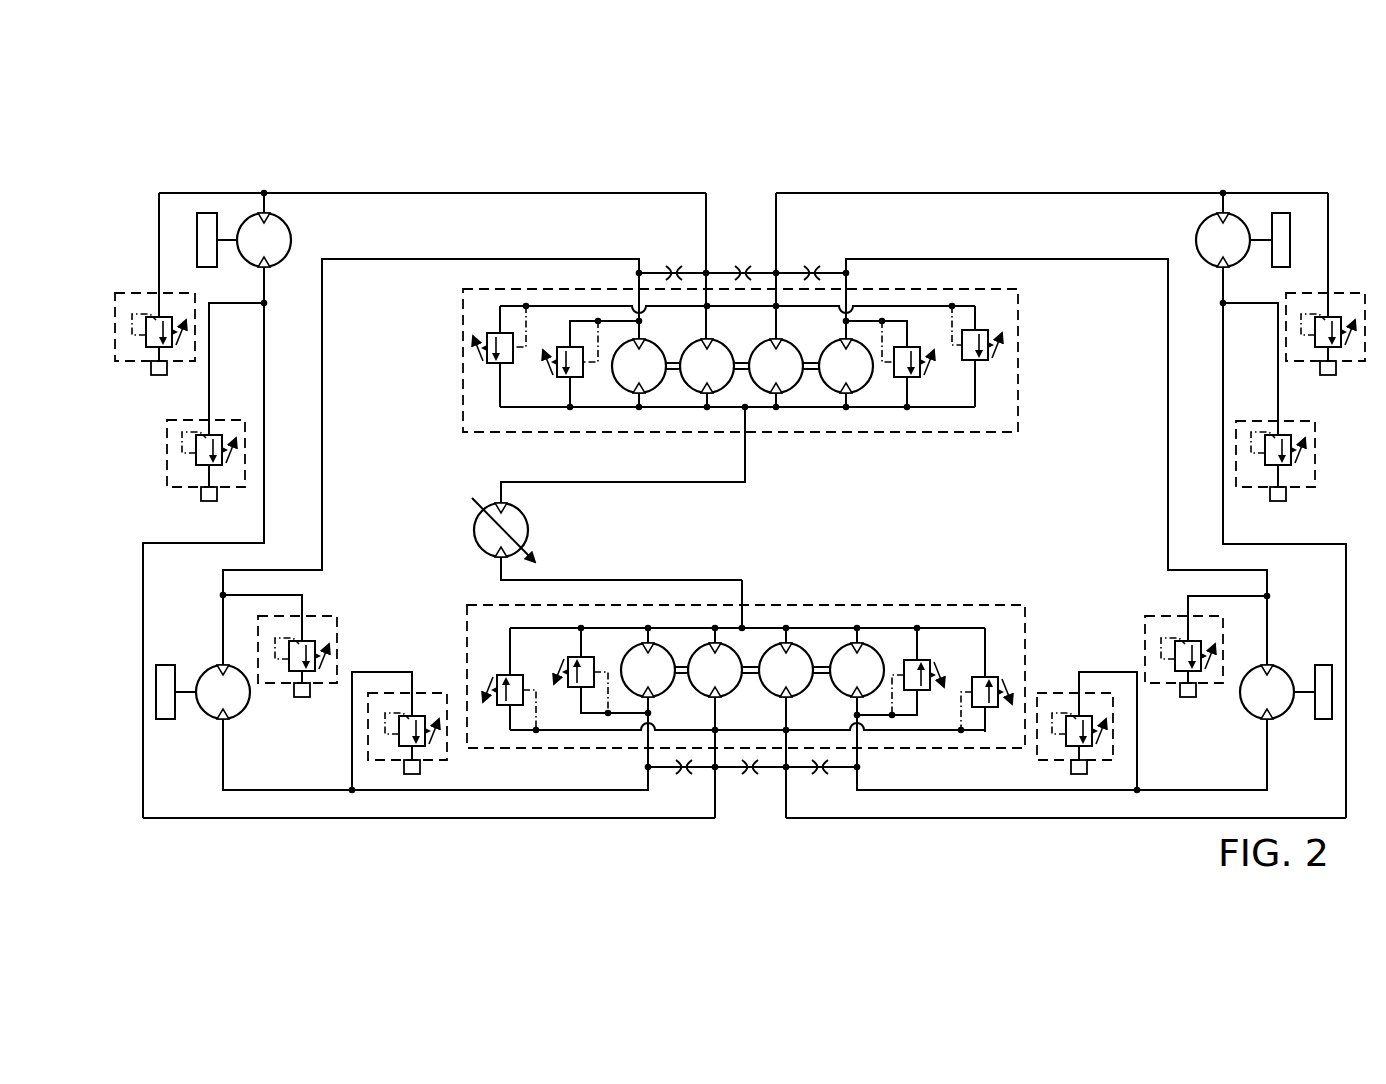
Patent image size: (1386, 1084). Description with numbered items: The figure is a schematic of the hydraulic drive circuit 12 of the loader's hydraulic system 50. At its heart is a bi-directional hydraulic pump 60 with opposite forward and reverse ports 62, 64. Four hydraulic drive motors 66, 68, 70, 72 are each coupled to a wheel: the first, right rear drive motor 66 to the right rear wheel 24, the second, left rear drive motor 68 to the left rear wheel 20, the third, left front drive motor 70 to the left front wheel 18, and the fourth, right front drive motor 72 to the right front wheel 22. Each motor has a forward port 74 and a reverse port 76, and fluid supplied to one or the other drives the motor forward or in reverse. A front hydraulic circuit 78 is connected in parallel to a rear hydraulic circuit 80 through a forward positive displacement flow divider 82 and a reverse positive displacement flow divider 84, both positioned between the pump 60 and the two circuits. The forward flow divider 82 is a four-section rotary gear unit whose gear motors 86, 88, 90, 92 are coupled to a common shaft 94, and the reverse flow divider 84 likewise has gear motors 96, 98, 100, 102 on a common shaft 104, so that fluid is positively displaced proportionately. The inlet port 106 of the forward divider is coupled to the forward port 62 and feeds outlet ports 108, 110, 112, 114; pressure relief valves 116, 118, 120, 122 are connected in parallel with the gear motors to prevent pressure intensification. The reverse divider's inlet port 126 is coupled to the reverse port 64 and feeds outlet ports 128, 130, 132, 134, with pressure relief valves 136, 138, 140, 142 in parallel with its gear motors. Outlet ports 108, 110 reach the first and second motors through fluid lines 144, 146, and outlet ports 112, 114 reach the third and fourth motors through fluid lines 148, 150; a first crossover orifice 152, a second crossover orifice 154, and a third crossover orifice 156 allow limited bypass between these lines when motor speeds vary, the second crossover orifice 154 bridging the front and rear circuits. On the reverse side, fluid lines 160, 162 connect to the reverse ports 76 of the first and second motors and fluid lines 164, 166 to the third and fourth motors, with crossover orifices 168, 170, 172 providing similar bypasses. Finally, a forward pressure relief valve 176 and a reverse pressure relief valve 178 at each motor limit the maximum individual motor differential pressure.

The hydraulic drive circuit 12 is at (1297, 182).
The left front wheel 18 is at (1272, 260).
The left rear wheel 20 is at (220, 258).
The right front wheel 22 is at (1322, 665).
The right rear wheel 24 is at (165, 665).
The hydraulic system 50 is at (1297, 120).
The bi-directional hydraulic pump 60 is at (530, 530).
The forward port 62 is at (498, 502).
The reverse port 64 is at (500, 558).
The first drive motor 66 is at (250, 697).
The second drive motor 68 is at (292, 242).
The third drive motor 70 is at (1196, 240).
The fourth drive motor 72 is at (1240, 700).
The forward port 74 is at (270, 218).
The reverse port 76 is at (268, 268).
The front hydraulic circuit 78 is at (981, 172).
The rear hydraulic circuit 80 is at (567, 175).
The forward positive displacement flow divider 82 is at (1030, 353).
The reverse positive displacement flow divider 84 is at (1035, 606).
The first rotary gear motor 86 is at (617, 385).
The second rotary gear motor 88 is at (690, 392).
The third rotary gear motor 90 is at (800, 390).
The fourth rotary gear motor 92 is at (868, 390).
The common shaft 94 is at (742, 360).
The gear motor 96 is at (641, 645).
The gear motor 98 is at (708, 645).
The gear motor 100 is at (795, 645).
The gear motor 102 is at (866, 645).
The common shaft 104 is at (752, 655).
The inlet port 106 is at (745, 435).
The first outlet port 108 is at (639, 298).
The second outlet port 110 is at (707, 295).
The third outlet port 112 is at (777, 292).
The fourth outlet port 114 is at (849, 279).
The pressure relief valve 116 is at (564, 347).
The pressure relief valve 118 is at (486, 363).
The pressure relief valve 120 is at (978, 361).
The pressure relief valve 122 is at (910, 379).
The inlet port 126 is at (742, 625).
The outlet port 128 is at (648, 749).
The outlet port 130 is at (716, 752).
The third outlet port 132 is at (786, 778).
The fourth outlet port 134 is at (859, 750).
The pressure relief valve 136 is at (569, 658).
The pressure relief valve 138 is at (500, 706).
The pressure relief valve 140 is at (988, 710).
The pressure relief valve 142 is at (926, 665).
The fluid line 144 is at (425, 259).
The fluid line 146 is at (405, 192).
The fluid line 148 is at (1083, 192).
The fluid line 150 is at (1060, 259).
The first crossover orifice 152 is at (674, 268).
The second crossover orifice 154 is at (743, 268).
The third crossover orifice 156 is at (813, 268).
The fluid line 160 is at (282, 790).
The fluid line 162 is at (438, 818).
The fluid line 164 is at (1052, 818).
The fluid line 166 is at (1210, 790).
The first crossover orifice 168 is at (684, 774).
The second crossover orifice 170 is at (750, 774).
The third crossover orifice 172 is at (820, 774).
The forward pressure relief valve 176 is at (137, 293).
The reverse pressure relief valve 178 is at (184, 487).